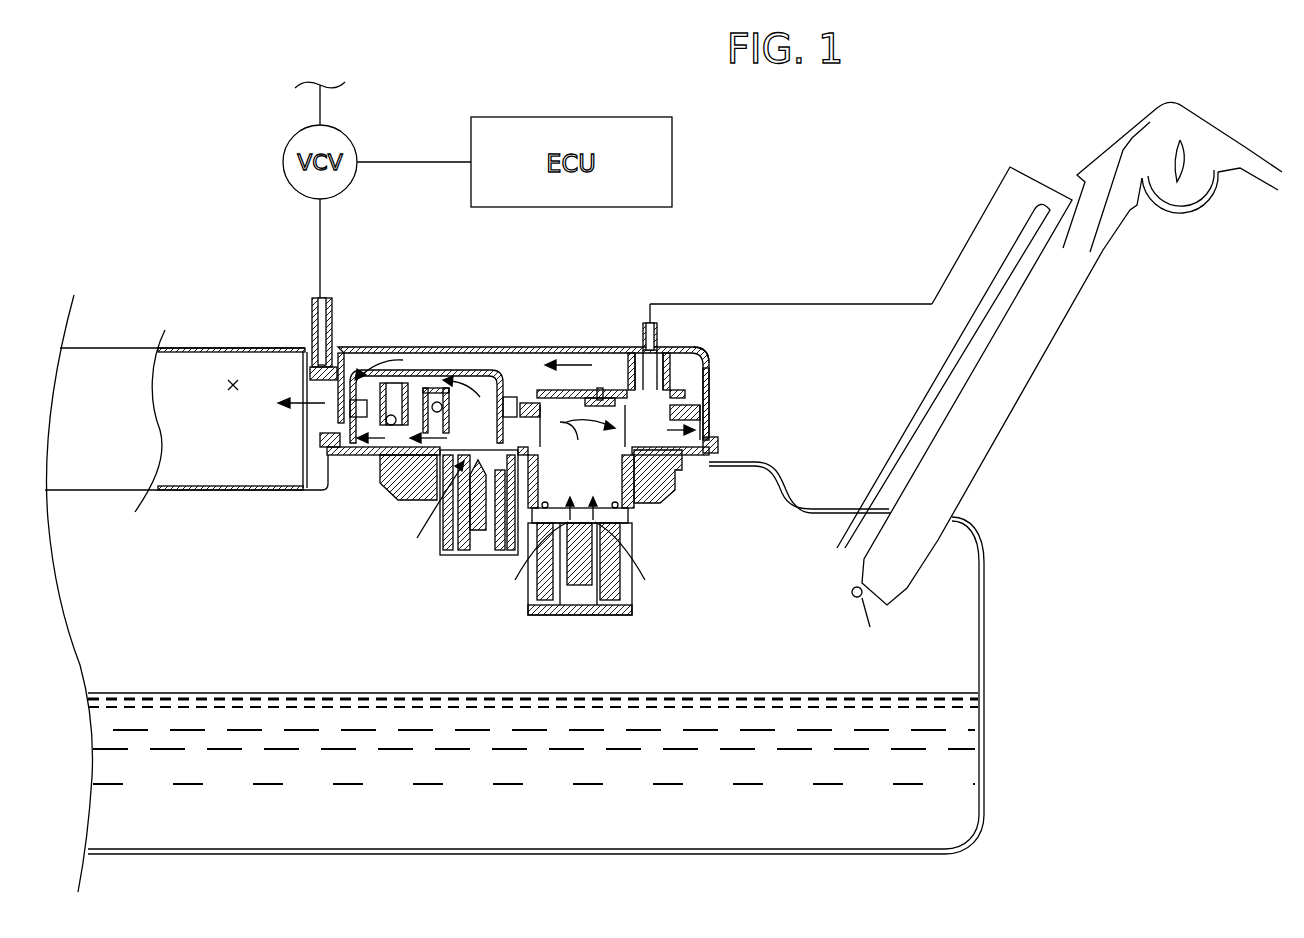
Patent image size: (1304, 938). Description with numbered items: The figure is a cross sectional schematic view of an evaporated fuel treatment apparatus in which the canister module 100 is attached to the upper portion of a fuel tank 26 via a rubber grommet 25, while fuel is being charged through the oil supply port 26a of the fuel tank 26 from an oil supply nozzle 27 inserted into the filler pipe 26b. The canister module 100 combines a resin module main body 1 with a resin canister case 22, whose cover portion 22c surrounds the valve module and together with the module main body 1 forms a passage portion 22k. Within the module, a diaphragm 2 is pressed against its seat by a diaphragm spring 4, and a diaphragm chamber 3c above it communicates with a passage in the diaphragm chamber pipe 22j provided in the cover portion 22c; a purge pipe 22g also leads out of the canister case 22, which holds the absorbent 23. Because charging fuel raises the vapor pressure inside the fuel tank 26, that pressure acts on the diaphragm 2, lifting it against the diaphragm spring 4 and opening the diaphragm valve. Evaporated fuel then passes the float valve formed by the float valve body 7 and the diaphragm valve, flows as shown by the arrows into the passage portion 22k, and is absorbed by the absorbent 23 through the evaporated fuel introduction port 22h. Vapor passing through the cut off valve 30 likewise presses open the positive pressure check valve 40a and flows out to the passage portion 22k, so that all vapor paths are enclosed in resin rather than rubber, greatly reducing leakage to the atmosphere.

The canister module 100 is at (722, 366).
The module main body 1 is at (715, 445).
The diaphragm 2 is at (565, 383).
The diaphragm chamber 3c is at (688, 368).
The diaphragm spring 4 is at (603, 390).
The float valve body 7 is at (616, 600).
The canister case 22 is at (551, 334).
The cover portion 22c is at (710, 405).
The purge pipe 22g is at (312, 316).
The evaporated fuel introduction port 22h is at (320, 417).
The diaphragm chamber pipe 22j is at (640, 346).
The passage portion 22k is at (507, 363).
The absorbent 23 is at (228, 385).
The rubber grommet 25 is at (672, 492).
The fuel tank 26 is at (840, 512).
The oil supply port 26a is at (1085, 170).
The filler pipe 26b is at (1043, 356).
The oil supply nozzle 27 is at (1160, 108).
The cut off valve 30 is at (447, 567).
The positive pressure check valve 40a is at (415, 408).